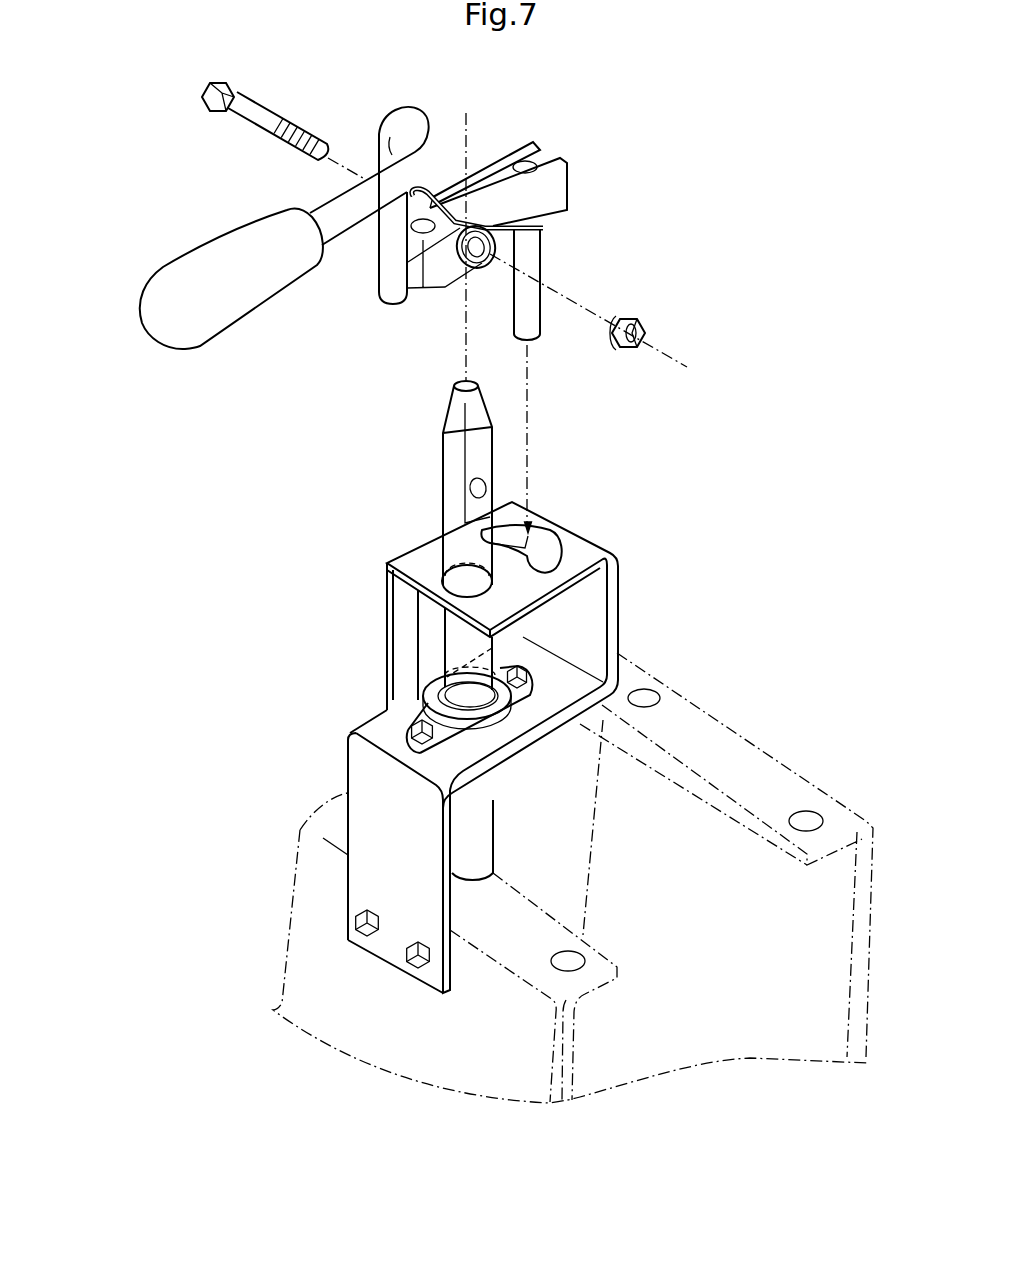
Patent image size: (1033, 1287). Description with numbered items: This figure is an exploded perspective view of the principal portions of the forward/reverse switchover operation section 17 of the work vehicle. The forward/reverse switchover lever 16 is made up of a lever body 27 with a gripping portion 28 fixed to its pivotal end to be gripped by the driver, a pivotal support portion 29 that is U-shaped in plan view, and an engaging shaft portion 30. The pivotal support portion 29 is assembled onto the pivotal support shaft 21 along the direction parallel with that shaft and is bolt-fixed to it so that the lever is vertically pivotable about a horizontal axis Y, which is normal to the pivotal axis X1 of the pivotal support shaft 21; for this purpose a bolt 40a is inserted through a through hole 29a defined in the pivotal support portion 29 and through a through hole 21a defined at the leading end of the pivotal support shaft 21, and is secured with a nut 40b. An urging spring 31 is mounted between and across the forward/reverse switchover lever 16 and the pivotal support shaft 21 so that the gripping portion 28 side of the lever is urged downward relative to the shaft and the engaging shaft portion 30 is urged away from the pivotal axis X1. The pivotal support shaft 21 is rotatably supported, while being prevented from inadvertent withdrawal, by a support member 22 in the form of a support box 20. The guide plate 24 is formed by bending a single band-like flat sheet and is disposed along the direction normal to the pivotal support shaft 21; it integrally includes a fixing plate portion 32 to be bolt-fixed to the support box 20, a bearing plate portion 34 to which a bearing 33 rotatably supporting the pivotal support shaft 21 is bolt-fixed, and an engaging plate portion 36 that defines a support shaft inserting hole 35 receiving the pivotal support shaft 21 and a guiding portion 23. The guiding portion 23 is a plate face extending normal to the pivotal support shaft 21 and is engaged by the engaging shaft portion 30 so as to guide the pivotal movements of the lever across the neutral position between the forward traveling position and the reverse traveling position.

The forward/reverse switchover lever 16 is at (414, 108).
The lever body 27 is at (330, 204).
The gripping portion 28 is at (160, 325).
The bolt 40a is at (240, 106).
The pivotal support portion 29 is at (558, 185).
The through hole 29a is at (425, 230).
The engaging shaft portion 30 is at (535, 330).
The urging spring 31 is at (478, 272).
The nut 40b is at (648, 330).
The pivotal axis X1 is at (460, 333).
The horizontal axis Y is at (560, 288).
The pivotal support shaft 21 is at (448, 488).
The through hole 21a is at (485, 490).
The forward/reverse switchover operation section 17 is at (484, 726).
The engaging plate portion 36 is at (578, 556).
The support shaft inserting hole 35 is at (465, 592).
The guiding portion 23 is at (538, 552).
The guide plate 24 is at (630, 621).
The bearing plate portion 34 is at (382, 727).
The fixing plate portion 32 is at (345, 768).
The bearing 33 is at (503, 728).
The support box 20 is at (588, 878).
The support member 22 is at (760, 745).